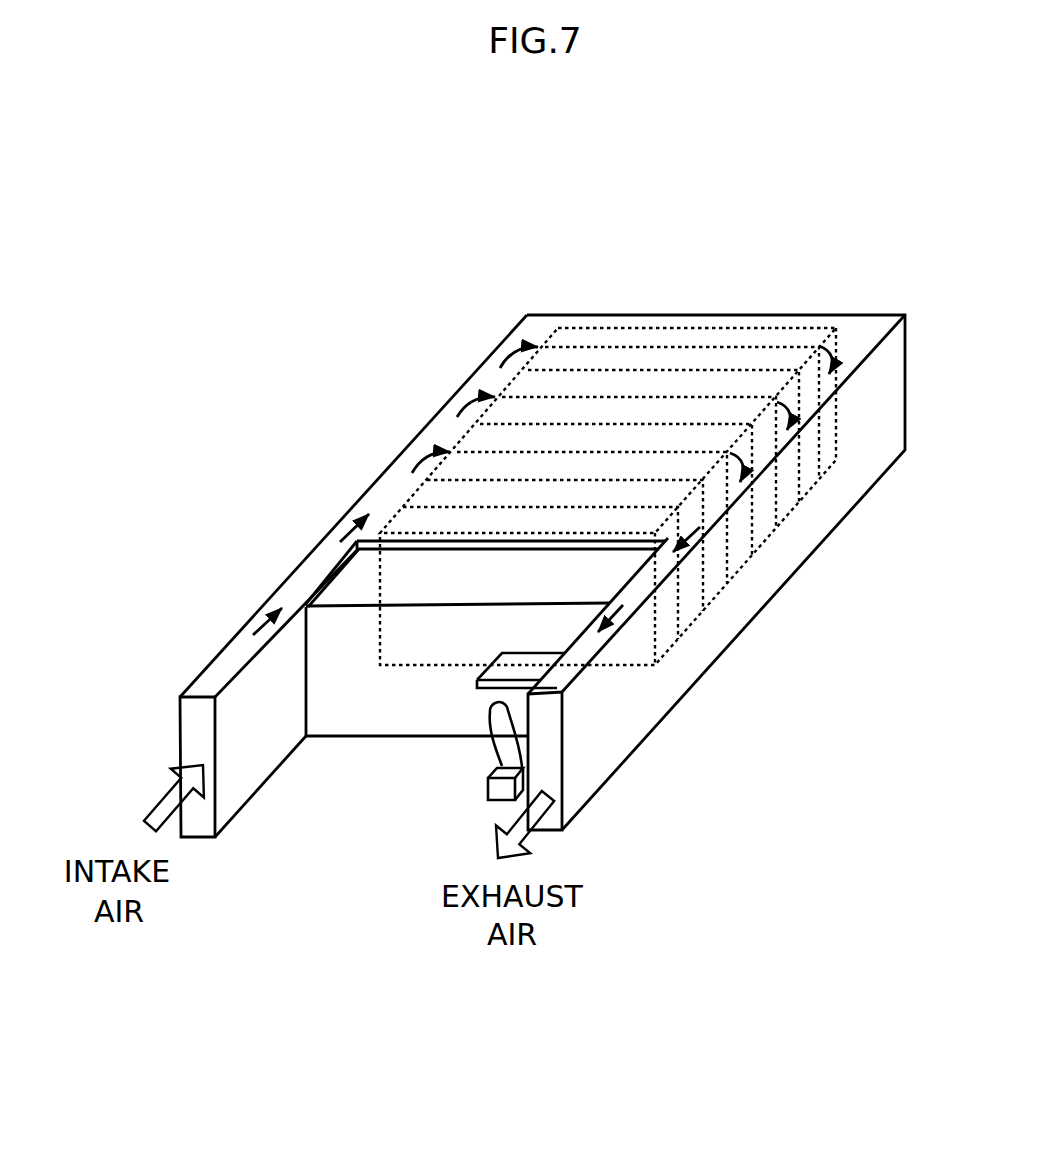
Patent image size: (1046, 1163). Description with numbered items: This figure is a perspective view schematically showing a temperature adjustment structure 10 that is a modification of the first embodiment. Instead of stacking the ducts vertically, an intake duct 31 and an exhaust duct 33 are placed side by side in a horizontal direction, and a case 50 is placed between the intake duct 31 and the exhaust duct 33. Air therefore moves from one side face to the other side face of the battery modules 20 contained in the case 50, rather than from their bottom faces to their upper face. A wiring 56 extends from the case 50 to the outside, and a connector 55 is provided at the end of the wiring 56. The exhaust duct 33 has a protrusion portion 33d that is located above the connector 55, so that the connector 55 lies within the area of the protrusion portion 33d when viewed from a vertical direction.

The housing / cooling device 10 is at (747, 309).
The battery modules 20 is at (640, 358).
The intake duct 31 is at (242, 758).
The exhaust duct 33 is at (592, 762).
The protrusion portion 33d is at (530, 670).
The case 50 is at (360, 703).
The connector 55 is at (495, 790).
The wiring 56 is at (487, 723).